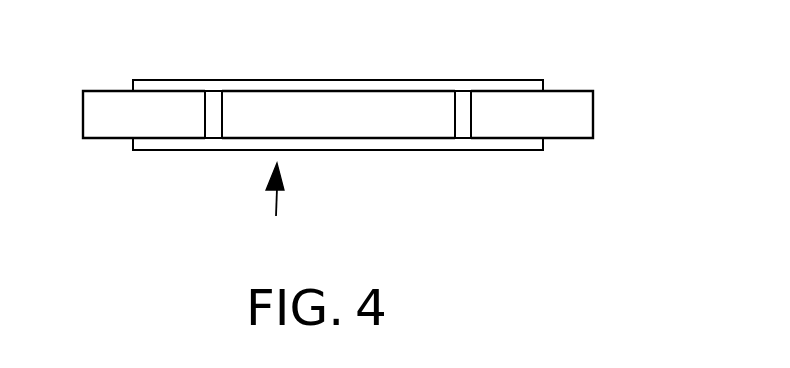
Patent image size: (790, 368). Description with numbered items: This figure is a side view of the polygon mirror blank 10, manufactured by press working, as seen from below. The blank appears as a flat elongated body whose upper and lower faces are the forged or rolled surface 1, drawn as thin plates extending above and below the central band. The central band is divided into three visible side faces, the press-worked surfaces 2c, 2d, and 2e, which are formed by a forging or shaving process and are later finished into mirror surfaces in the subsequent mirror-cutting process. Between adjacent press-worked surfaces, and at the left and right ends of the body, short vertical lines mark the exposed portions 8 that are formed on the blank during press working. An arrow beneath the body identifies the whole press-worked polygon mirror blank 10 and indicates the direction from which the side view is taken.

The forged or rolled surface 1 is at (362, 80).
The press-worked surface 2c is at (155, 100).
The press-worked surface 2d is at (258, 102).
The press-worked surface 2e is at (495, 105).
The exposed portion 8 is at (113, 138).
The polygon mirror blank 10 is at (272, 205).